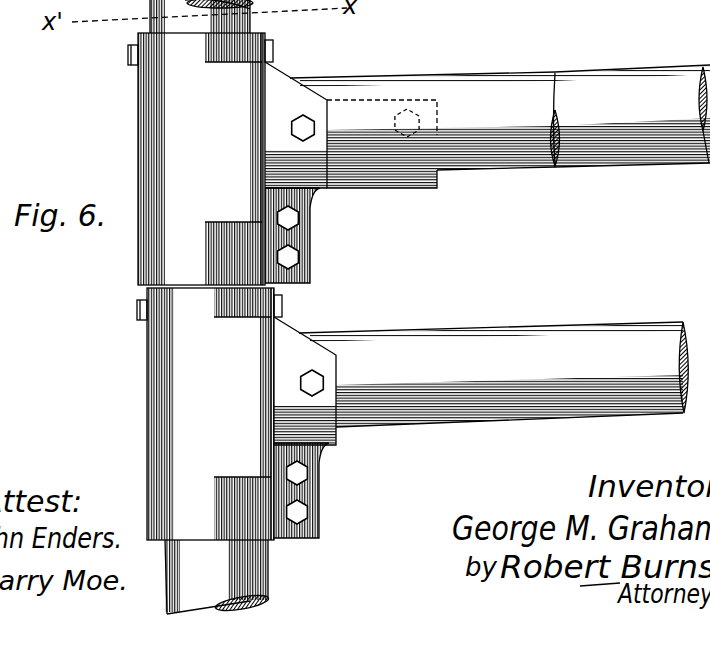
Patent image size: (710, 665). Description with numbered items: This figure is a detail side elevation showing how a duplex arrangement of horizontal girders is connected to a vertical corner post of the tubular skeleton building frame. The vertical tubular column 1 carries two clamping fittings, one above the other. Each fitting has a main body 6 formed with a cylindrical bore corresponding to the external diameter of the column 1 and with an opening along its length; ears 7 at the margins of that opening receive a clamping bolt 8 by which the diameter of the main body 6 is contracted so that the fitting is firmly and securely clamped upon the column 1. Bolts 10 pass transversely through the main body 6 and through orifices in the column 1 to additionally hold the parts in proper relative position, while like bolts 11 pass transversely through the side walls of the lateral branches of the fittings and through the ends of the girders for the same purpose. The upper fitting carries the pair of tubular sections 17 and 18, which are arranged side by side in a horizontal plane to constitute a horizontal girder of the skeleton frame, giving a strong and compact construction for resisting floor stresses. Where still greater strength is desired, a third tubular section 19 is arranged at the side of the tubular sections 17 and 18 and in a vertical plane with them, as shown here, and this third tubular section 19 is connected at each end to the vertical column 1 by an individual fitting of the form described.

The tubular column 1 is at (252, 23).
The main body of the fitting 6 is at (233, 286).
The ears 7 is at (293, 252).
The clamping bolt 8 is at (300, 220).
The bolts 10 is at (128, 58).
The bolts 11 is at (300, 113).
The tubular section 17 is at (422, 130).
The tubular section 18 is at (631, 116).
The third tubular section 19 is at (493, 374).